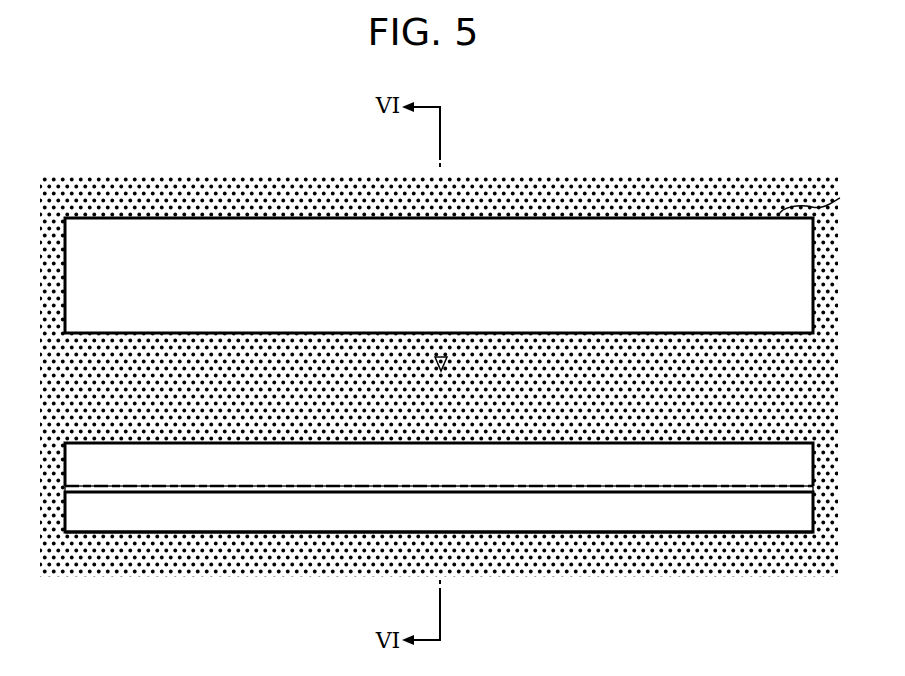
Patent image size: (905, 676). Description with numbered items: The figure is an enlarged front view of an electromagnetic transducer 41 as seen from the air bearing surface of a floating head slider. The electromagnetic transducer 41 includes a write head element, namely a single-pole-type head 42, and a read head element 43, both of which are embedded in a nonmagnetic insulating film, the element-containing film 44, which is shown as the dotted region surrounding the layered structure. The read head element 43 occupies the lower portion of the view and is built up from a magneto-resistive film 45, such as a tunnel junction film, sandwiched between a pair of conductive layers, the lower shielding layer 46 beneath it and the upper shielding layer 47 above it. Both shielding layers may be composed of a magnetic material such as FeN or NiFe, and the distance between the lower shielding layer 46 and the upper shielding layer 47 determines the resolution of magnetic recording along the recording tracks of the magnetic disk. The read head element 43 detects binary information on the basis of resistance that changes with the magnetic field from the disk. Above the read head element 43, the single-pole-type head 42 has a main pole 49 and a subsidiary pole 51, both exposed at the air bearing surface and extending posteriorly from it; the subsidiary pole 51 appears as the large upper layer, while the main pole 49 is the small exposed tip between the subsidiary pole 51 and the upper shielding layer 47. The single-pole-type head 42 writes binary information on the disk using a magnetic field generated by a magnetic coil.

The electromagnetic transducer 41 is at (162, 181).
The single-pole-type head 42 is at (293, 218).
The read head element 43 is at (273, 533).
The element-containing film 44 is at (795, 352).
The magneto-resistive film 45 is at (443, 486).
The lower shielding layer 46 is at (778, 535).
The upper shielding layer 47 is at (777, 440).
The main pole 49 is at (441, 371).
The subsidiary pole 51 is at (824, 200).